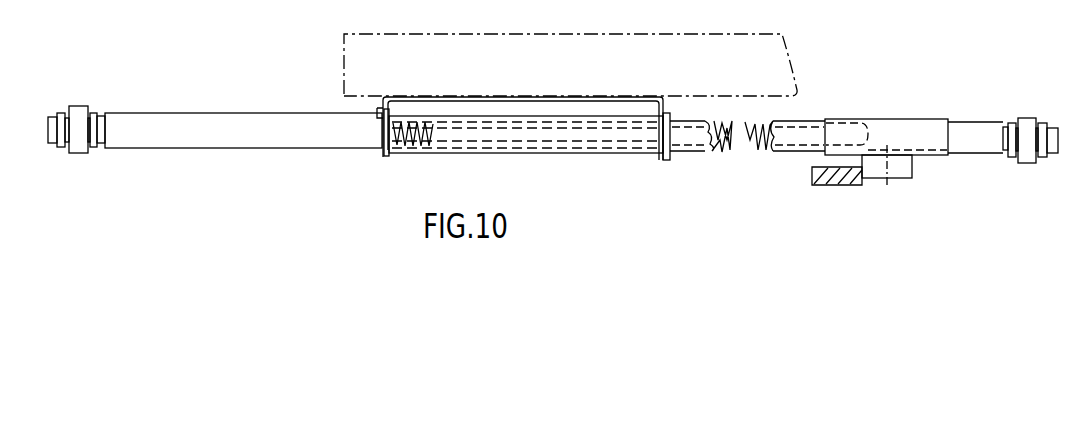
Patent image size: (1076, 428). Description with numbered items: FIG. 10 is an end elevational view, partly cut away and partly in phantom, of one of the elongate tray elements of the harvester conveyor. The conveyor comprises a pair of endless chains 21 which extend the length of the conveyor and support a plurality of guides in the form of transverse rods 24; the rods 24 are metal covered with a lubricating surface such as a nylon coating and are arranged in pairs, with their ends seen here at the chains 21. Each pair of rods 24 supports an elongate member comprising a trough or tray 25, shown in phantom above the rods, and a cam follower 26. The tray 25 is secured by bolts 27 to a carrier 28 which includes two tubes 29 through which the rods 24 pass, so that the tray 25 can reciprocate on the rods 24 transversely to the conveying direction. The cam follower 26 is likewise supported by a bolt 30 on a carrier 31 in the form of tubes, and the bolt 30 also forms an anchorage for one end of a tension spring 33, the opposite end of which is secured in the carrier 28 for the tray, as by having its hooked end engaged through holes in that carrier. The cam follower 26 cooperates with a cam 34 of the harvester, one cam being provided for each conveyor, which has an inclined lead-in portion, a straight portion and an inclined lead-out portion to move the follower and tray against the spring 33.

The endless chains 21 is at (79, 153).
The transverse rods 24 is at (173, 140).
The tray 25 is at (565, 62).
The cam follower 26 is at (893, 172).
The bolts 27 is at (426, 97).
The carrier 28 is at (392, 158).
The tubes 29 is at (637, 154).
The bolt 30 is at (887, 188).
The carrier 31 is at (927, 132).
The tension spring 33 is at (760, 142).
The cam 34 is at (824, 185).